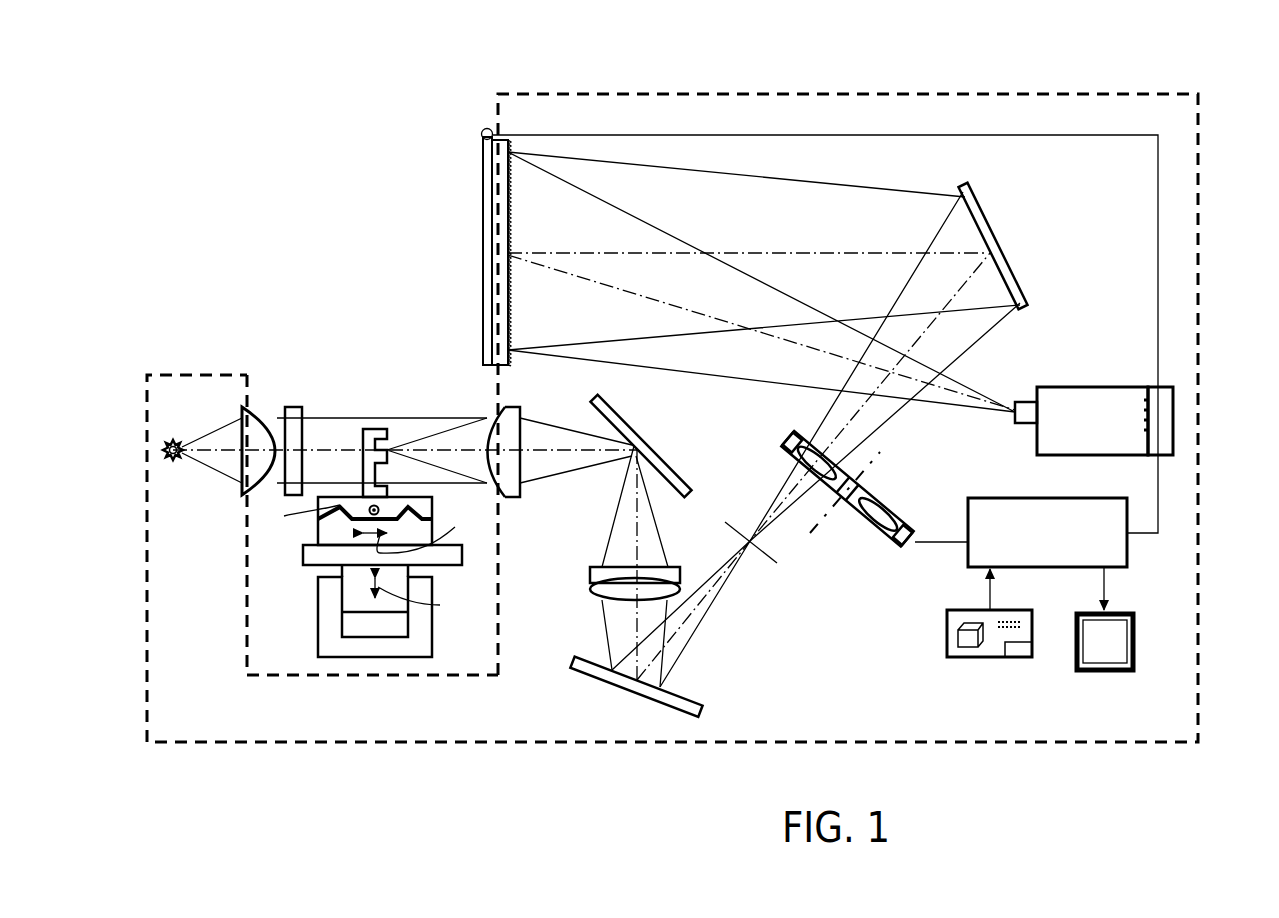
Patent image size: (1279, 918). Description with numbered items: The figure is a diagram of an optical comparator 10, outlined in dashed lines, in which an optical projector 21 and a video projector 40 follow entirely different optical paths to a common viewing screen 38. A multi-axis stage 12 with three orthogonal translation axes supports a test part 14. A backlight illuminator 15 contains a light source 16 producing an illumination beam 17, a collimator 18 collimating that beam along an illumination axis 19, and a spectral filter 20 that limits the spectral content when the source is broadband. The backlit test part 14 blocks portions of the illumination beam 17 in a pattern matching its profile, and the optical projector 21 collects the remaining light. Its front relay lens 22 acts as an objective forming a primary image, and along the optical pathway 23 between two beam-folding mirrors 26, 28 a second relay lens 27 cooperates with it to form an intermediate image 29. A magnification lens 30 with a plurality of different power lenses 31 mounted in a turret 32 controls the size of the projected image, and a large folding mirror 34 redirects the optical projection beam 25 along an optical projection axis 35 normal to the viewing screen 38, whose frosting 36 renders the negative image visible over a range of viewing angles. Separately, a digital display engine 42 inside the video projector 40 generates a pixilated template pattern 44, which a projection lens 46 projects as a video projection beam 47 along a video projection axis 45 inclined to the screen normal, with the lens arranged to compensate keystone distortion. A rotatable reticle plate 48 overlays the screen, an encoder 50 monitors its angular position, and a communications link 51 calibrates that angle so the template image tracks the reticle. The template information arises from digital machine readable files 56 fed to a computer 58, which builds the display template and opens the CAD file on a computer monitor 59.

The optical comparator 10 is at (583, 90).
The multi-axis stage 12 is at (316, 622).
The test part 14 is at (372, 428).
The backlight illuminator 15 is at (220, 401).
The light source 16 is at (176, 440).
The illumination beam 17 is at (212, 477).
The collimator 18 is at (246, 406).
The illumination axis 19 is at (330, 449).
The spectral filter 20 is at (294, 406).
The optical projector 21 is at (782, 640).
The front relay lens 22 is at (497, 409).
The optical pathway 23 is at (635, 515).
The optical projection beam 25 is at (683, 165).
The beam-folding mirror 26 is at (600, 422).
The second relay lens 27 is at (590, 577).
The beam-folding mirror 28 is at (685, 698).
The intermediate image 29 is at (738, 532).
The magnification lens 30 is at (790, 440).
The power lenses 31 is at (800, 476).
The turret 32 is at (905, 547).
The large folding mirror 34 is at (968, 232).
The optical projection axis 35 is at (766, 252).
The frosting 36 is at (511, 200).
The viewing screen 38 is at (487, 190).
The video projector 40 is at (1092, 421).
The digital display engine 42 is at (1160, 430).
The pixilated template pattern 44 is at (1142, 405).
The video projection axis 45 is at (688, 308).
The projection lens 46 is at (1022, 401).
The video projection beam 47 is at (632, 368).
The rotatable reticle plate 48 is at (482, 300).
The encoder 50 is at (481, 131).
The communications link 51 is at (1048, 136).
The digital machine readable files 56 is at (947, 633).
The computer 58 is at (1021, 554).
The computer monitor 59 is at (1076, 672).